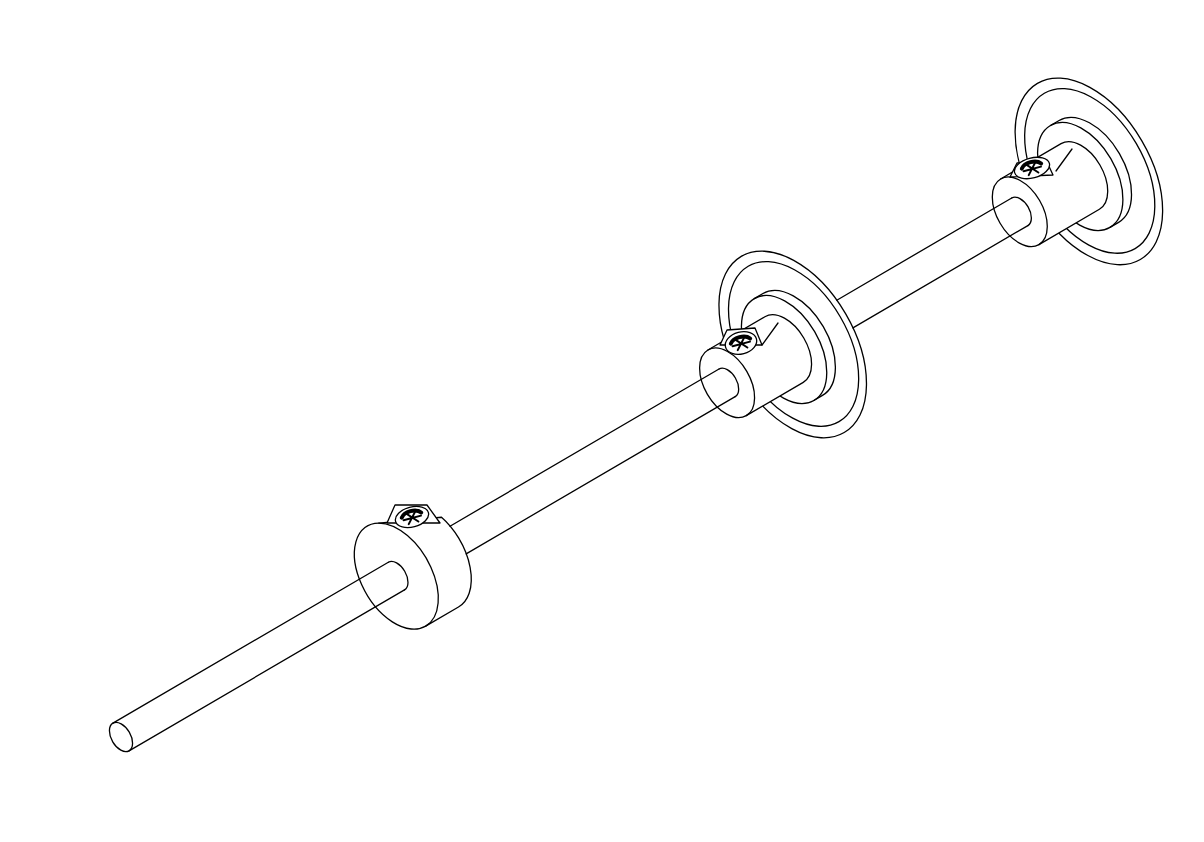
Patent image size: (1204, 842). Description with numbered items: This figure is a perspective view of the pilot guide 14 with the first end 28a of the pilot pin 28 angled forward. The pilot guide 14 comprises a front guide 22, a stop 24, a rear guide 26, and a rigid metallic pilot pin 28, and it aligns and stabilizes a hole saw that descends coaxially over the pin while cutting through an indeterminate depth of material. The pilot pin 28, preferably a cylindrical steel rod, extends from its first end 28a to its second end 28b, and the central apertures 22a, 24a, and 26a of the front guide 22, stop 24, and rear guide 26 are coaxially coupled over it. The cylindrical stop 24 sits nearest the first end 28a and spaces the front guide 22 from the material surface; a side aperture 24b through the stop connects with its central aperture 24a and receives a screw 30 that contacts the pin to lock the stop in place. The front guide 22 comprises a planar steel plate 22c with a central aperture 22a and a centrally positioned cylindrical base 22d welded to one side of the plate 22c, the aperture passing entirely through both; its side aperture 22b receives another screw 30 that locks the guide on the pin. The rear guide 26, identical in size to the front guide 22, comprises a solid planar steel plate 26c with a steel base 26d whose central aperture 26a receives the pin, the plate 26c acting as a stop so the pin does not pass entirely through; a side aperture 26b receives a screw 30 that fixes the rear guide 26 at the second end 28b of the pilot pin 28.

The pilot guide 14 is at (403, 234).
The front guide 22 is at (768, 347).
The central aperture of the front guide 22a is at (721, 374).
The side aperture of the front guide 22b is at (709, 336).
The planar steel plate of the front guide 22c is at (820, 434).
The cylindrical base of the front guide 22d is at (766, 414).
The stop 24 is at (397, 571).
The central aperture of the stop 24a is at (393, 569).
The side aperture of the stop 24b is at (396, 516).
The rear guide 26 is at (1062, 175).
The central aperture of the rear guide 26a is at (1014, 200).
The side aperture of the rear guide 26b is at (1000, 165).
The planar steel plate of the rear guide 26c is at (1113, 264).
The steel base of the rear guide 26d is at (1082, 167).
The pilot pin 28 is at (545, 492).
The first end of the pilot pin 28a is at (118, 742).
The second end of the pilot pin 28b is at (947, 269).
The screw 30 is at (424, 513).